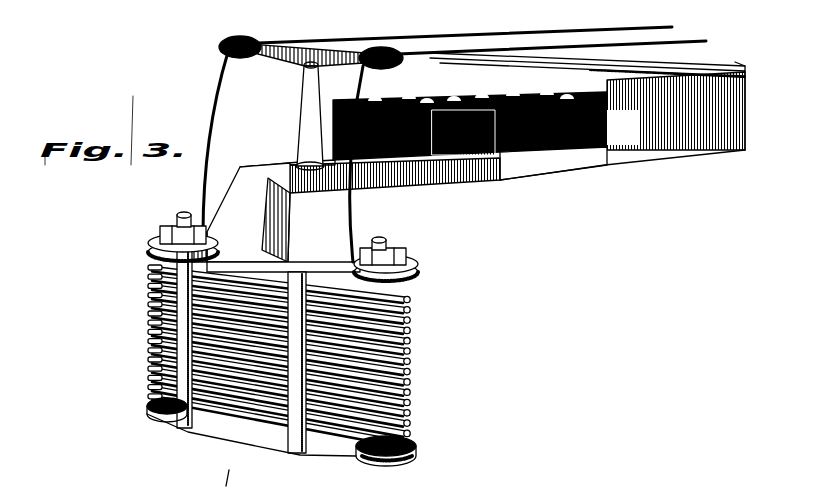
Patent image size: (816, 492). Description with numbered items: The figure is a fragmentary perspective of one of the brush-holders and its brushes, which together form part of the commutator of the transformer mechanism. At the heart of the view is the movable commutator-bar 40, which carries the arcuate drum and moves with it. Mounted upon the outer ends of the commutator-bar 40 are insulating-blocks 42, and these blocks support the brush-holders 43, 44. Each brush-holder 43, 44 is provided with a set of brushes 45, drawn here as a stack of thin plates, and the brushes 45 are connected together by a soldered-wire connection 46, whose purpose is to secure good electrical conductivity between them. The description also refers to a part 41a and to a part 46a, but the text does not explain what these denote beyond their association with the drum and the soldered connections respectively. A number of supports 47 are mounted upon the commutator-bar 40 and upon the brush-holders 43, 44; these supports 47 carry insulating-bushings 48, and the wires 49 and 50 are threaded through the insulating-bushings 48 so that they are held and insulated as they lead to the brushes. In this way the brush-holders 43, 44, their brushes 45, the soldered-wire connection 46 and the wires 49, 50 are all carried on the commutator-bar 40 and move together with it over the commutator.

The commutator-bar 40 is at (616, 161).
The top band of block 41a is at (712, 60).
The insulating-blocks 42 is at (443, 99).
The brush-holder 43 is at (307, 264).
The brush-holder 44 is at (622, 126).
The brushes 45 is at (239, 380).
The soldered-wire connection 46 is at (146, 300).
The washers and nuts 46a is at (158, 236).
The supports 47 is at (306, 129).
The insulating-bushings 48 is at (257, 29).
The wire 49 is at (374, 69).
The wire 50 is at (206, 146).